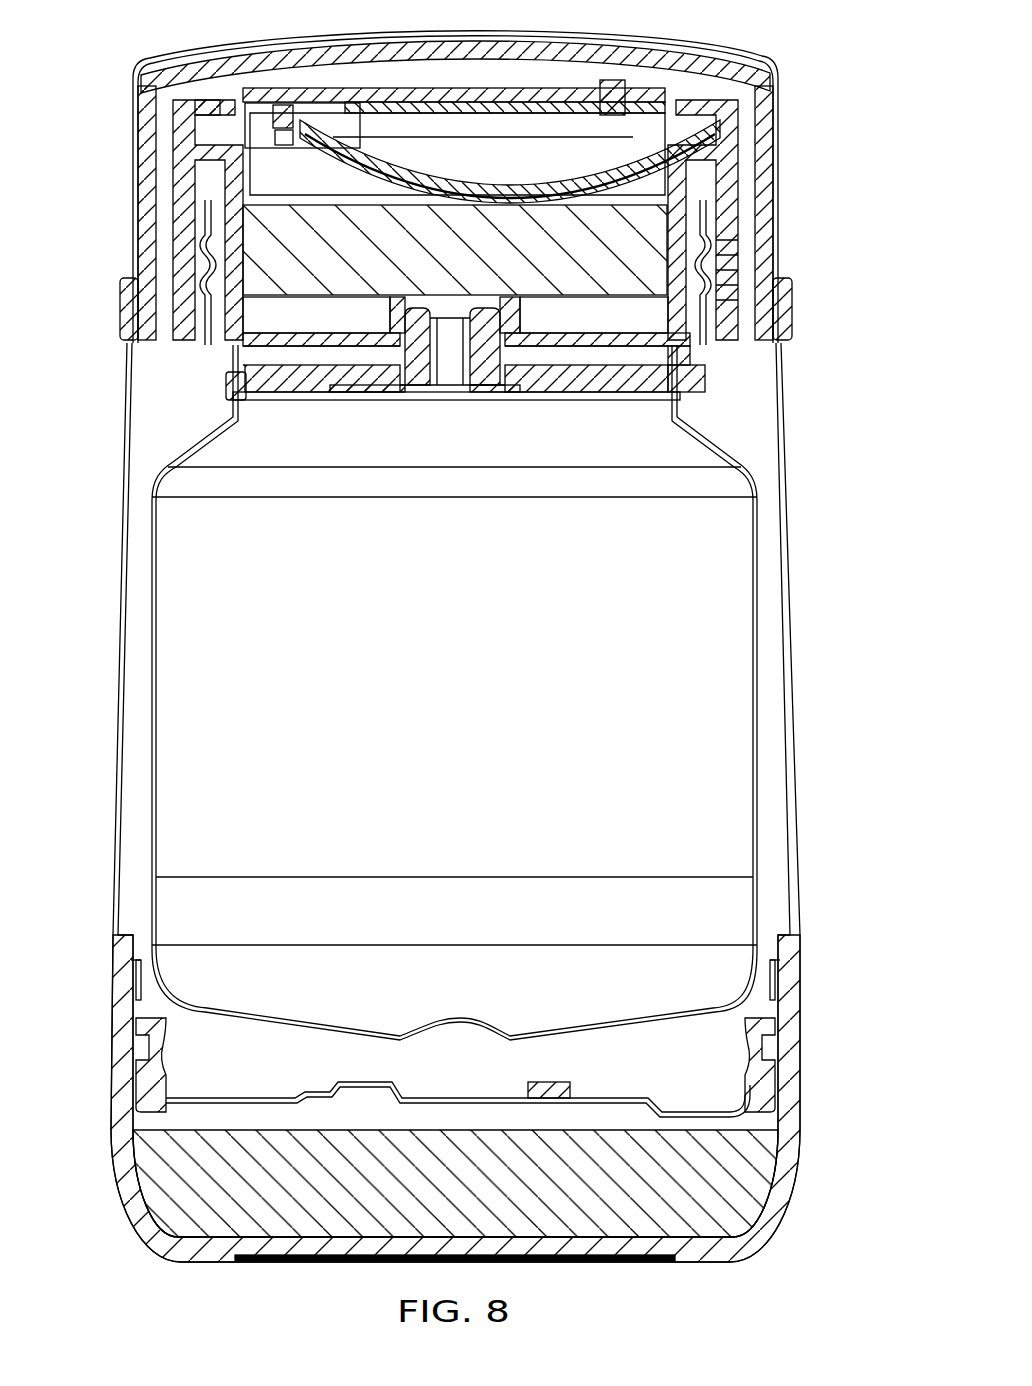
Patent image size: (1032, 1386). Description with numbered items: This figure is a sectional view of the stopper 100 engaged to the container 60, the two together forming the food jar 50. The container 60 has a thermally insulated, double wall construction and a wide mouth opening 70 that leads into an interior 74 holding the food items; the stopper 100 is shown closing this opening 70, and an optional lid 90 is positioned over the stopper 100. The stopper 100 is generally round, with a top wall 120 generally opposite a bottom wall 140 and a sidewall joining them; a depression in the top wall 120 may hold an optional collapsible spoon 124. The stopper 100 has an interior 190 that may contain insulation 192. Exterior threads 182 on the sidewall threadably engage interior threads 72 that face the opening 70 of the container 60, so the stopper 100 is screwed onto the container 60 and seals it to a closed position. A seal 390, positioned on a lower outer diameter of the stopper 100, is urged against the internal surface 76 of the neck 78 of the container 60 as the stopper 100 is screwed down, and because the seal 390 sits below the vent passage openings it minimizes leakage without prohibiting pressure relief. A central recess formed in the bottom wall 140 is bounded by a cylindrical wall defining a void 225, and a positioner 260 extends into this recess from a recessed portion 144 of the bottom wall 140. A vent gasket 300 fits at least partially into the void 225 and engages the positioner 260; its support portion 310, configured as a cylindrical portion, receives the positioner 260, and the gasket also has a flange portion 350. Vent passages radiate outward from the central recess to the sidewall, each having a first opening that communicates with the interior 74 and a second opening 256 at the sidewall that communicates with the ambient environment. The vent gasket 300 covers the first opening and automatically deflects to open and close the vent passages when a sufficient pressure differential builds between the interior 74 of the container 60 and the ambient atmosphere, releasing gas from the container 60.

The food jar 50 is at (808, 391).
The container 60 is at (793, 855).
The opening 70 is at (233, 357).
The interior threads 72 is at (215, 318).
The interior 74 is at (736, 733).
The internal surface 76 is at (672, 420).
The neck 78 is at (713, 442).
The lid 90 is at (693, 45).
The stopper 100 is at (735, 135).
The top wall 120 is at (202, 108).
The collapsible spoon 124 is at (463, 108).
The bottom wall 140 is at (277, 395).
The recessed portion 144 is at (400, 303).
The exterior threads 182 is at (220, 283).
The interior 190 is at (657, 312).
The insulation 192 is at (643, 252).
The void 225 is at (435, 355).
The second opening 256 is at (240, 397).
The positioner 260 is at (457, 357).
The vent gasket 300 is at (417, 380).
The support portion 310 is at (490, 377).
The flange portion 350 is at (373, 398).
The seal 390 is at (683, 380).